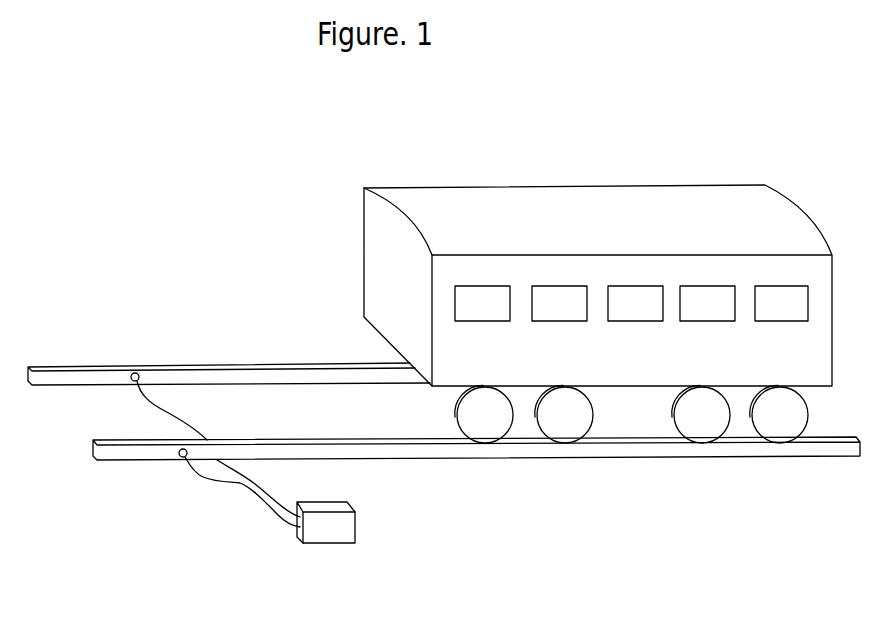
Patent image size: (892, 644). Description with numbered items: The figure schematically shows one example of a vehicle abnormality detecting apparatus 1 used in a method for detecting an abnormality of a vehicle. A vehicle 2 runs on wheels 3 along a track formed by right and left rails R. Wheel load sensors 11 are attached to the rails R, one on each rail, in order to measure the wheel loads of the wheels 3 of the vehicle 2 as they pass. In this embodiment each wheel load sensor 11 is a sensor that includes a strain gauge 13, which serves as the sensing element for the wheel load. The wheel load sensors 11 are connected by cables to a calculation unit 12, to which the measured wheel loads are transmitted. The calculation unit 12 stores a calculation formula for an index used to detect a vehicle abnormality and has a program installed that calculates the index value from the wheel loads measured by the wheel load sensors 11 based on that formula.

The vehicle abnormality detecting apparatus 1 is at (229, 529).
The vehicle 2 is at (410, 197).
The wheel 3 is at (488, 432).
The wheel load sensor 11 is at (211, 426).
The strain gauge 13 is at (138, 374).
The calculation unit 12 is at (332, 537).
The rail R is at (303, 365).